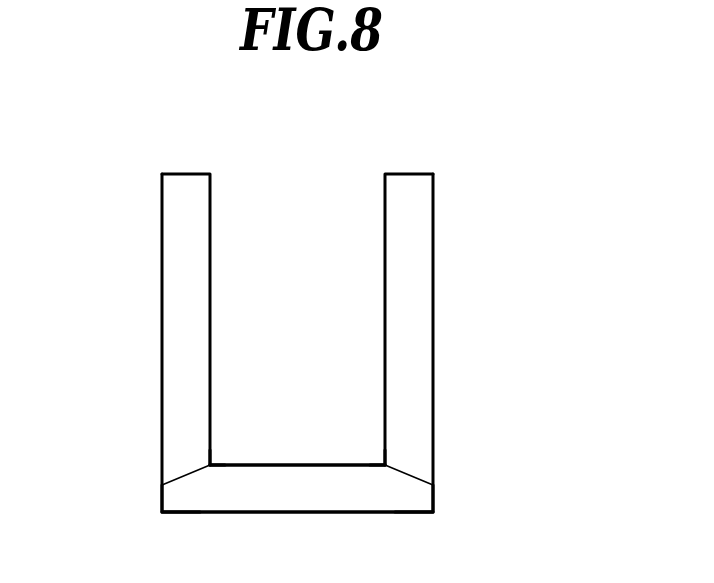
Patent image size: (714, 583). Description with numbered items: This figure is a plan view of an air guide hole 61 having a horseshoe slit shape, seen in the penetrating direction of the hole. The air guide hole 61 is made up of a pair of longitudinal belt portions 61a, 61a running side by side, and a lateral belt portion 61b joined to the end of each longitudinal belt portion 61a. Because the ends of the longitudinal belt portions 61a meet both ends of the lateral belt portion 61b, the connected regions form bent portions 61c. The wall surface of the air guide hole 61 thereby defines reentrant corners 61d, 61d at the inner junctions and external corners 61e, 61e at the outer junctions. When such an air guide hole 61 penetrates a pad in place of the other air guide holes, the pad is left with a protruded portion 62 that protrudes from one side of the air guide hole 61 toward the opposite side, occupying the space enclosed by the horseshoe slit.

The air guide hole 61 is at (444, 182).
The longitudinal belt portions 61a is at (178, 282).
The bottom outer surface 61b is at (320, 497).
The bent portions 61c is at (202, 492).
The reentrant corners 61d is at (162, 485).
The external corners 61e is at (219, 458).
The protruded portions 62 is at (278, 455).